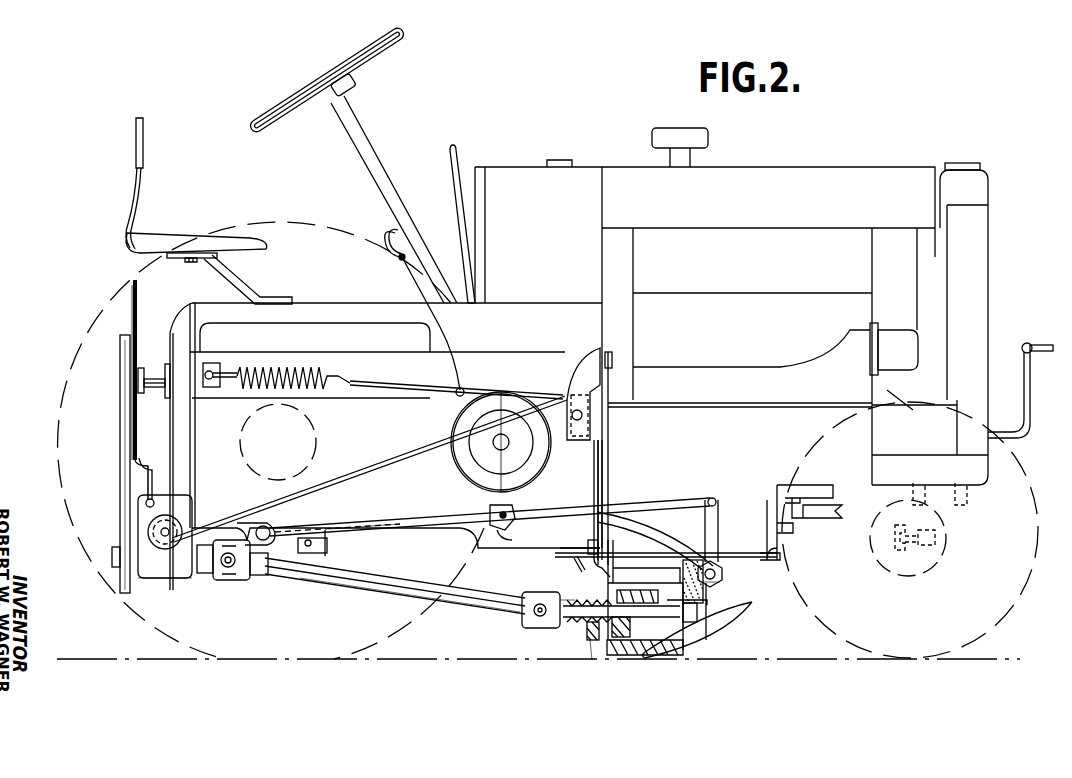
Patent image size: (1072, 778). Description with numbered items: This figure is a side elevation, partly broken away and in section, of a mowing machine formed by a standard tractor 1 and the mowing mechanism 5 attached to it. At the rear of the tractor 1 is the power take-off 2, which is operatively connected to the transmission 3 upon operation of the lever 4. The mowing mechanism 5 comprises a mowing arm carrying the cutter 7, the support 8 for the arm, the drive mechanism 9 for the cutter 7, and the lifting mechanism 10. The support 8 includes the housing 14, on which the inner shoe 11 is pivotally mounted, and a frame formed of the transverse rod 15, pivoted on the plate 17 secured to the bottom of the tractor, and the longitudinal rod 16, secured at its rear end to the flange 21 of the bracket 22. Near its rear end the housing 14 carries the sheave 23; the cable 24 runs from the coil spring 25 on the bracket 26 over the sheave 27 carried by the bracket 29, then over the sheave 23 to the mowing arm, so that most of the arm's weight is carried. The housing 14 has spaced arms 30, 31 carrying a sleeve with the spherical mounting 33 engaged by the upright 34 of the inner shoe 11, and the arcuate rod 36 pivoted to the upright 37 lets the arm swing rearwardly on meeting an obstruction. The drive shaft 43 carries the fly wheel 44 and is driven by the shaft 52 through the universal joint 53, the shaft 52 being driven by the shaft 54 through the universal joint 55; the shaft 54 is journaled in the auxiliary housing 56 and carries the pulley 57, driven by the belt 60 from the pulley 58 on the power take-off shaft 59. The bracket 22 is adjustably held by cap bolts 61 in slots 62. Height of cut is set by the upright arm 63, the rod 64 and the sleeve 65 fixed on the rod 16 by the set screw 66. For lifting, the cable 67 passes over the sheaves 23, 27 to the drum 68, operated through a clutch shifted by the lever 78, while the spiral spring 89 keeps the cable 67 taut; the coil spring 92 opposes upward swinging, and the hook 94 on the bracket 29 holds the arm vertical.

The tractor 1 is at (794, 150).
The power take-off 2 is at (147, 409).
The transmission 3 is at (540, 369).
The lever 4 is at (455, 148).
The mowing mechanism 5 is at (395, 599).
The cutter 7 is at (617, 647).
The support 8 is at (722, 596).
The drive mechanism 9 is at (382, 598).
The lifting mechanism 10 is at (187, 592).
The inner shoe 11 is at (712, 642).
The housing 14 is at (655, 566).
The rod 15 is at (723, 574).
The rod 16 is at (407, 523).
The plate 17 is at (738, 553).
The flange 21 is at (265, 533).
The bracket 22 is at (320, 540).
The sheave 23 is at (588, 545).
The cable 24 is at (522, 388).
The coil spring 25 is at (300, 368).
The bracket 26 is at (218, 370).
The sheave 27 is at (578, 445).
The bracket 29 is at (565, 352).
The arm 30 is at (580, 624).
The arm 31 is at (618, 637).
The spherical mounting 33 is at (588, 640).
The upright 34 is at (592, 660).
The arcuate rod 36 is at (705, 612).
The upright 37 is at (700, 632).
The drive shaft 43 is at (565, 605).
The fly wheel 44 is at (634, 603).
The shaft 52 is at (388, 584).
The universal joint 53 is at (535, 600).
The shaft 54 is at (205, 574).
The universal joint 55 is at (230, 580).
The auxiliary housing 56 is at (182, 535).
The pulley 57 is at (112, 550).
The pulley 58 is at (120, 388).
The power take-off shaft 59 is at (151, 378).
The belt 60 is at (124, 481).
The cap bolts 61 is at (360, 530).
The slots 62 is at (327, 553).
The upright arm 63 is at (712, 520).
The rod 64 is at (658, 510).
The sleeve 65 is at (488, 510).
The set screw 66 is at (512, 540).
The cable 67 is at (378, 470).
The drum 68 is at (163, 549).
The lever 78 is at (150, 462).
The spiral spring 89 is at (156, 500).
The coil spring 92 is at (578, 570).
The hook 94 is at (612, 363).